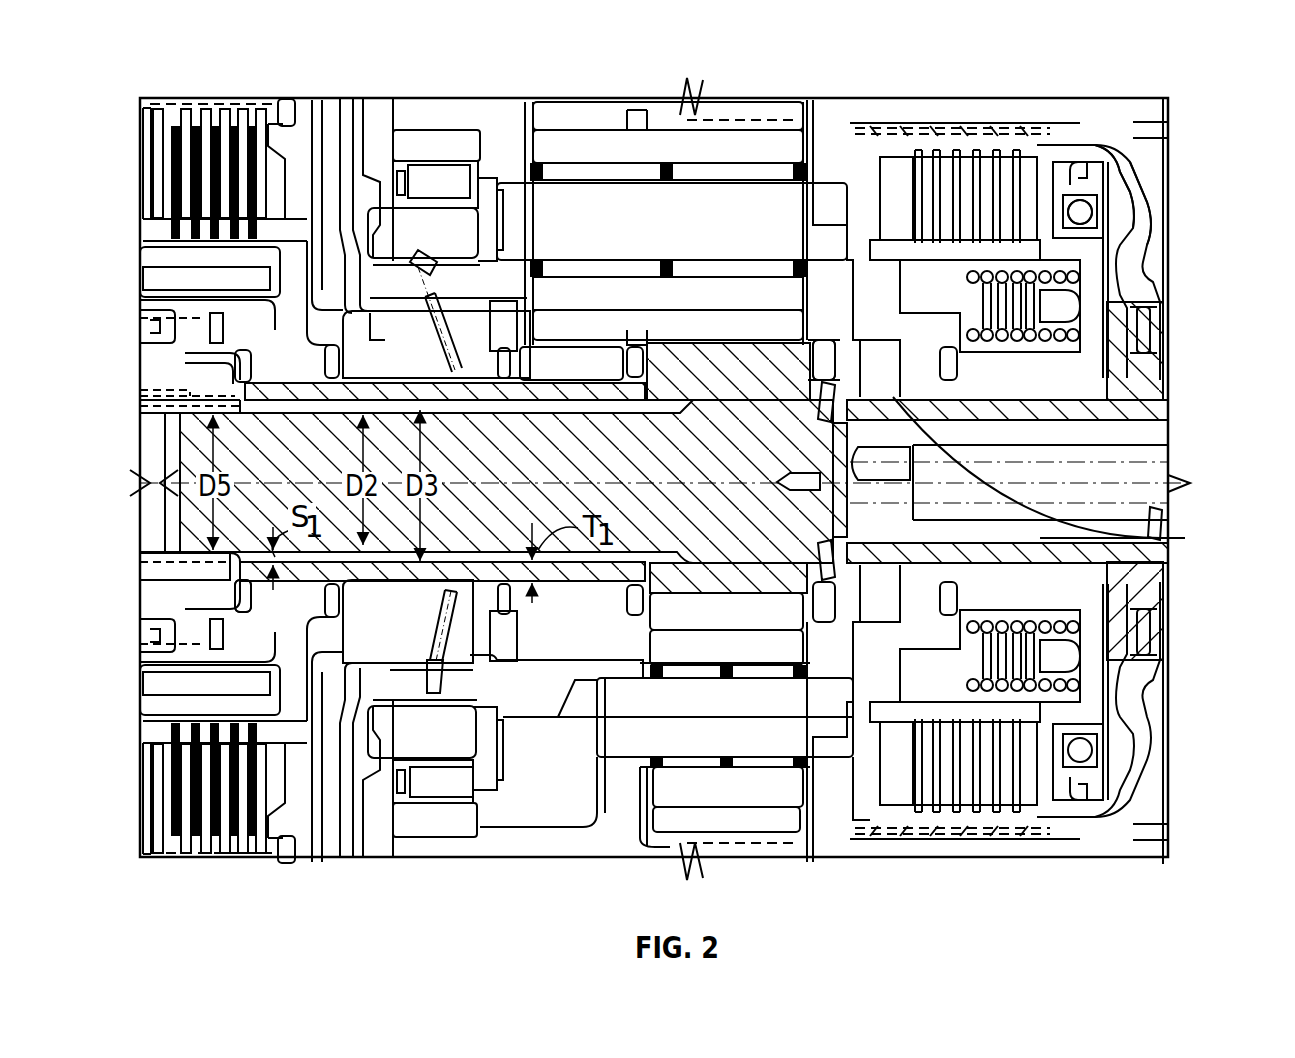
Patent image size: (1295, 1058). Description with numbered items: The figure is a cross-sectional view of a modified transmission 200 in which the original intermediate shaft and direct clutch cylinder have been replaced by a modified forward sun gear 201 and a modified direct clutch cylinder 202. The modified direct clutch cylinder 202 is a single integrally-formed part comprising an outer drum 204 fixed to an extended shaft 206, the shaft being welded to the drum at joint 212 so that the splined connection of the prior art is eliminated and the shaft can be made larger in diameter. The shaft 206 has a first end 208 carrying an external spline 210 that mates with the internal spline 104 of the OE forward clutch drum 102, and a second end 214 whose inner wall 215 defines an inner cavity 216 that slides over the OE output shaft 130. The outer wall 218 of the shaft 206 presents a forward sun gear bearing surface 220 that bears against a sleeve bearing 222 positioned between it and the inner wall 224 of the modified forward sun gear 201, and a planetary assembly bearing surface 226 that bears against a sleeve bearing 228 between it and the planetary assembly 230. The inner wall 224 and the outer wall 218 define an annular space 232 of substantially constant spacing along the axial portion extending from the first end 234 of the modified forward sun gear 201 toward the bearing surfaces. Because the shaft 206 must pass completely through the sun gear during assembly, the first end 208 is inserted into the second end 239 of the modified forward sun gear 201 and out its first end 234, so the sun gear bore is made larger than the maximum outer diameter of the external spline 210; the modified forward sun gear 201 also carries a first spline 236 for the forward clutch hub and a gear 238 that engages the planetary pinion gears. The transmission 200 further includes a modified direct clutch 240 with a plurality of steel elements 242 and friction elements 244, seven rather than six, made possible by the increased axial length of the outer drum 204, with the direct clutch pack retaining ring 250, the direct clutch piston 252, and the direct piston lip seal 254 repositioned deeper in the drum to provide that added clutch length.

The modified transmission 200 is at (488, 92).
The modified forward sun gear 201 is at (690, 372).
The modified direct clutch cylinder 202 is at (1160, 165).
The outer drum 204 is at (1120, 135).
The extended shaft 206 is at (480, 462).
The first end 208 is at (170, 465).
The external spline 210 is at (190, 420).
The joint 212 is at (1150, 290).
The second end 214 is at (1172, 365).
The inner wall 215 is at (838, 428).
The inner cavity 216 is at (830, 505).
The outer wall 218 is at (438, 412).
The forward sun gear bearing surface 220 is at (765, 398).
The sleeve bearing 222 is at (745, 577).
The inner wall 224 is at (530, 390).
The planetary assembly bearing surface 226 is at (1135, 531).
The sleeve bearing 228 is at (935, 400).
The planetary assembly 230 is at (870, 609).
The annular space 232 is at (400, 566).
The first end 234 is at (232, 375).
The first spline 236 is at (300, 590).
The gear 238 is at (750, 592).
The second end 239 is at (815, 378).
The modified direct clutch 240 is at (1042, 875).
The steel element 242 is at (920, 830).
The friction element 244 is at (975, 830).
The direct clutch pack retaining ring 250 is at (870, 830).
The direct clutch piston 252 is at (1062, 300).
The direct piston lip seal 254 is at (1075, 172).
The OE output shaft 130 is at (1172, 447).
The OE forward clutch drum 102 is at (165, 606).
The internal spline 104 is at (185, 395).